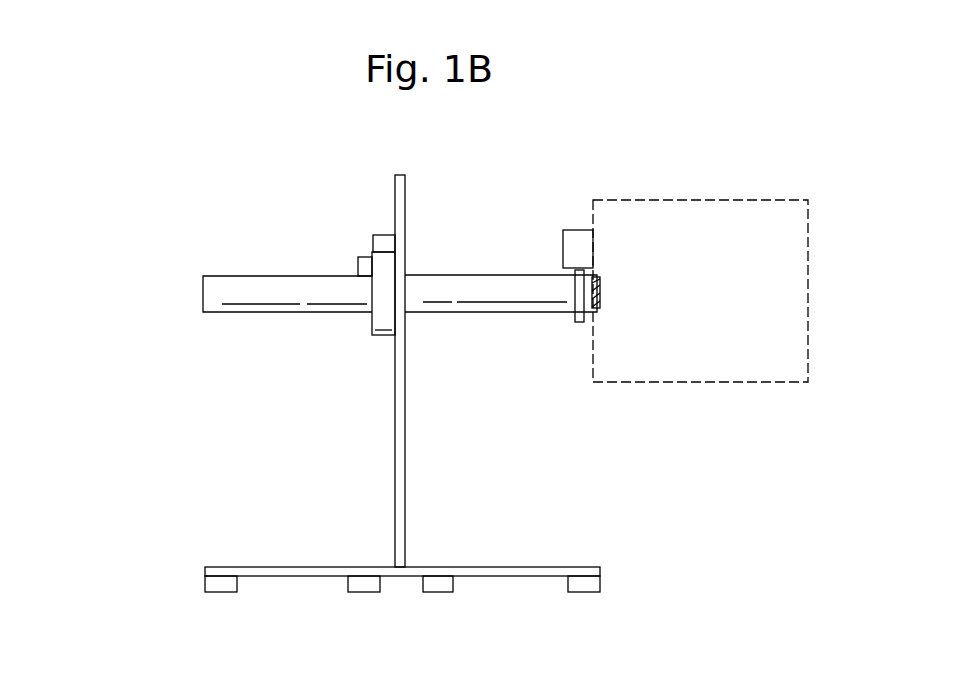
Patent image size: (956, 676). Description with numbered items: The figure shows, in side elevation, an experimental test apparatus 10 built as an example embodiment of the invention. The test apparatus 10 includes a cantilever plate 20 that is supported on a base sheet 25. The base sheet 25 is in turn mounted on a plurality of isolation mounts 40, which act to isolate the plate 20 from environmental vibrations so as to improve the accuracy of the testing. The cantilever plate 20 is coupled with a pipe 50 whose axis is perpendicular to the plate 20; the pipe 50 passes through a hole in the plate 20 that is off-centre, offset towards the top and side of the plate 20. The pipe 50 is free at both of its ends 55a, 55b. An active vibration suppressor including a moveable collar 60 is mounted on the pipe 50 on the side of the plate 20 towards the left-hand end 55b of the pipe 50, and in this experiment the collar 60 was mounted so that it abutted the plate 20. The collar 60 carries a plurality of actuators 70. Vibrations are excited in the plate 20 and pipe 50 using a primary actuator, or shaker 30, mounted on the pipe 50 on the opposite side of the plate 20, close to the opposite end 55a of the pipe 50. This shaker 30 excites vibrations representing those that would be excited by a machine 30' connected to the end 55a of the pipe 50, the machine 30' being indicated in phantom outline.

The test apparatus 10 is at (177, 177).
The cantilever plate 20 is at (405, 195).
The base sheet 25 is at (515, 573).
The isolation mounts 40 is at (220, 583).
The pipe 50 is at (242, 283).
The end of the pipe 55a is at (608, 298).
The left-hand end of the pipe 55b is at (188, 292).
The moveable collar 60 is at (378, 320).
The actuators 70 is at (360, 257).
The primary actuator (shaker) 30 is at (581, 225).
The machine 30' is at (700, 291).